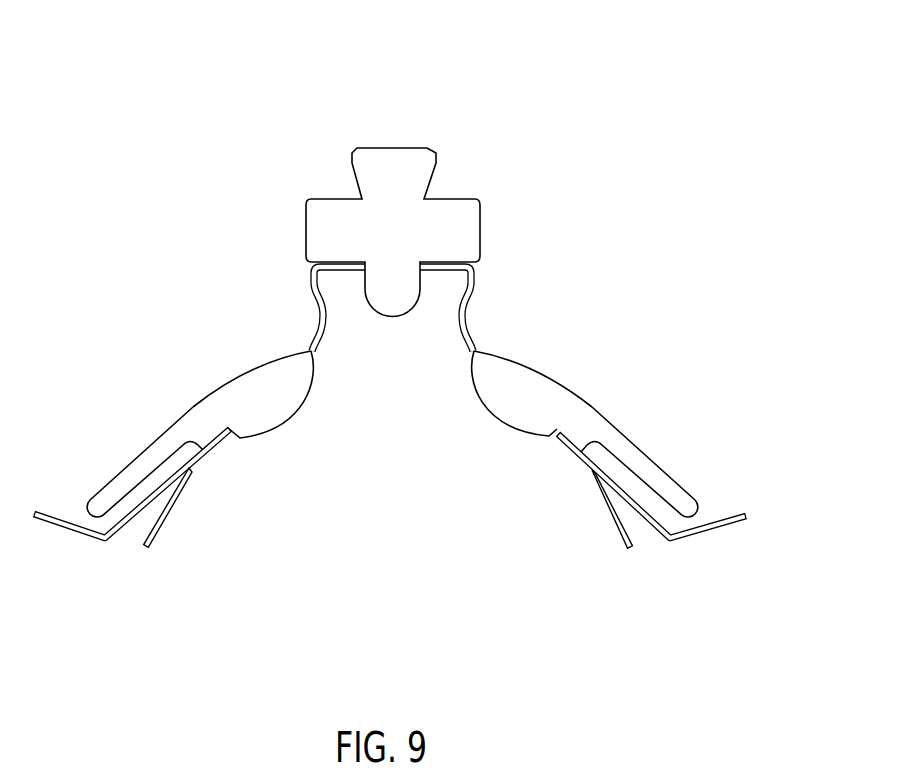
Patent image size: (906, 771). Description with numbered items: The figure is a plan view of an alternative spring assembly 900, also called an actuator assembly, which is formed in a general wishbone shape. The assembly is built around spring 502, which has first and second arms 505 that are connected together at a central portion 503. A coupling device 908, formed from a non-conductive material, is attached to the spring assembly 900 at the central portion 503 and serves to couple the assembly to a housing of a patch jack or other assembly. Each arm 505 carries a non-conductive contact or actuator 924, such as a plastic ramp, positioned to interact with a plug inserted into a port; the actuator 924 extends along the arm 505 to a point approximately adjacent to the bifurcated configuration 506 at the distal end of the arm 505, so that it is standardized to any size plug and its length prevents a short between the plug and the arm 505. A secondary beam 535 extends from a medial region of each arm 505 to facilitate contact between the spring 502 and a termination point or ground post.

The spring assembly 900 is at (208, 68).
The coupling device 908 is at (392, 160).
The spring 502 is at (312, 300).
The central portion 503 is at (437, 270).
The non-conductive contact or actuator 924 is at (260, 382).
The arm 505 is at (138, 398).
The bifurcated configuration 506 is at (48, 512).
The secondary beam 535 is at (147, 550).